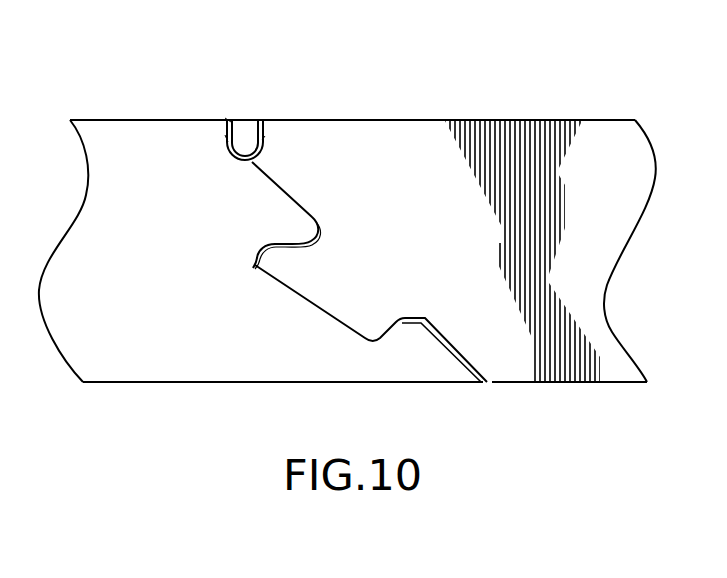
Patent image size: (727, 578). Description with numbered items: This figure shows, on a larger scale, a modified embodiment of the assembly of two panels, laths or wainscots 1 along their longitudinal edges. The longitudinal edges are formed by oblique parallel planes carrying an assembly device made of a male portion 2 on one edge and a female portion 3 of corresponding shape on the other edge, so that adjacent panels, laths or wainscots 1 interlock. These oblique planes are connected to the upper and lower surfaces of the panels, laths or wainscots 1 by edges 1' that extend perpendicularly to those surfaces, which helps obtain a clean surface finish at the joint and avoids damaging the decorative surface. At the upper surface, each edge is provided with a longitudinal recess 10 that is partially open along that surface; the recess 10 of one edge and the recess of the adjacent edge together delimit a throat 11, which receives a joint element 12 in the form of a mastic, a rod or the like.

The panel, lath or wainscot 1 is at (347, 278).
The edges 1' is at (245, 106).
The male portion 2 is at (292, 278).
The female portion 3 is at (253, 268).
The longitudinal recess 10 is at (269, 122).
The throat 11 is at (225, 106).
The joint element 12 is at (243, 128).